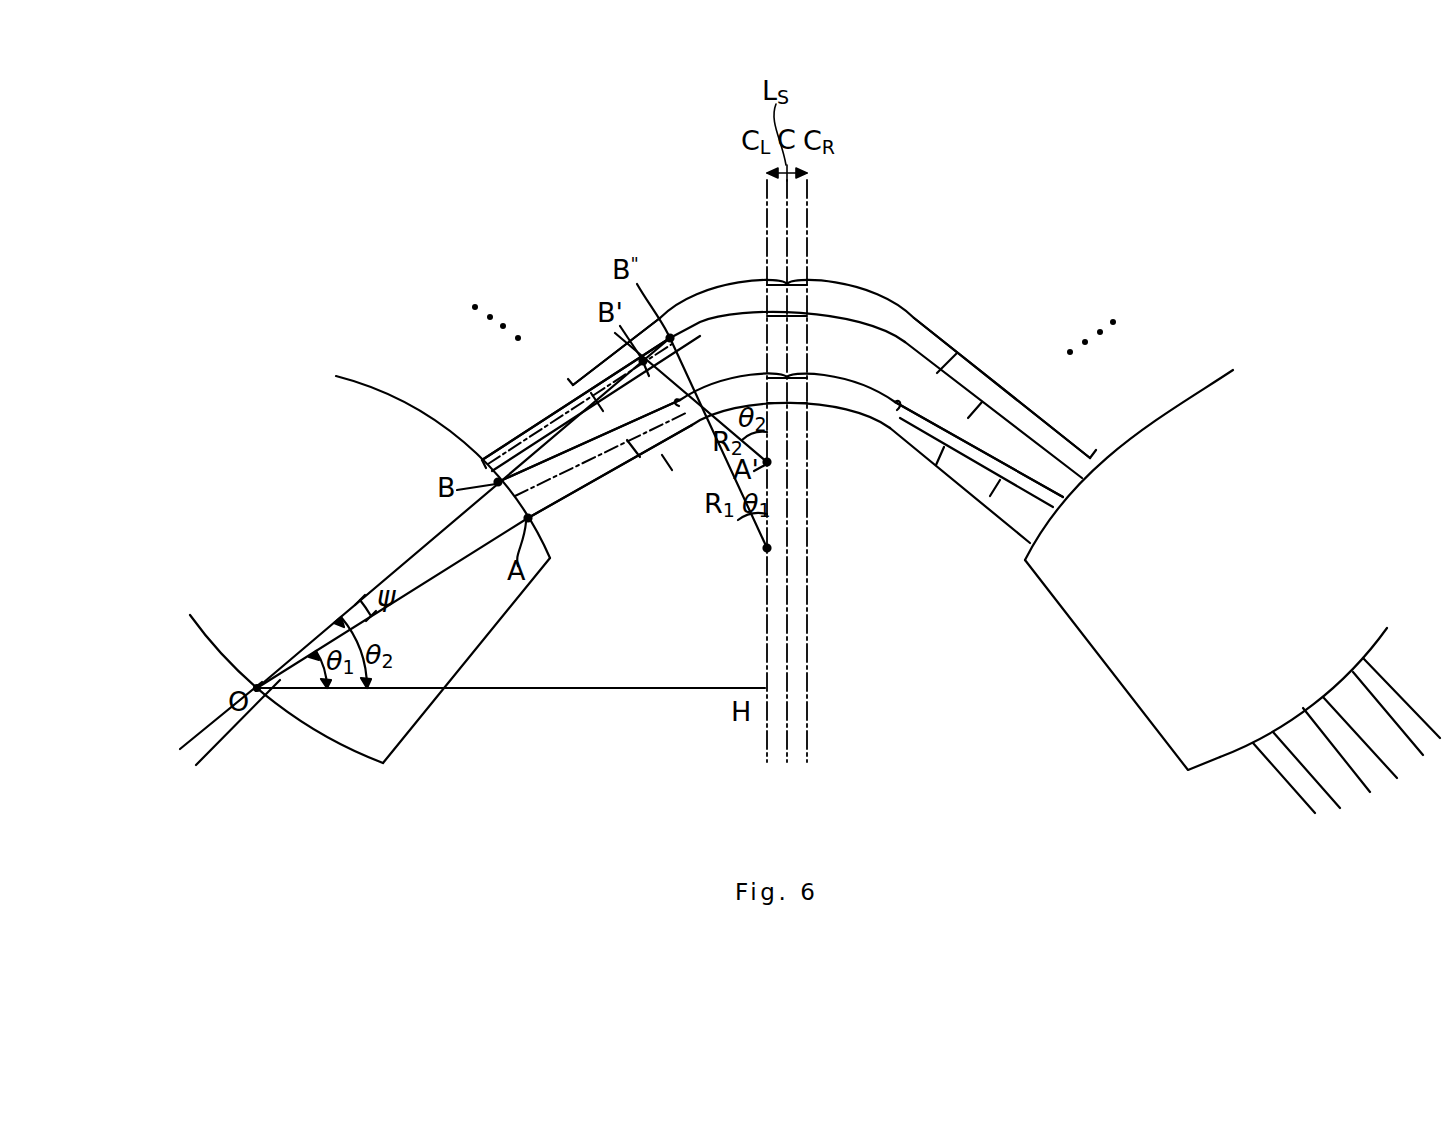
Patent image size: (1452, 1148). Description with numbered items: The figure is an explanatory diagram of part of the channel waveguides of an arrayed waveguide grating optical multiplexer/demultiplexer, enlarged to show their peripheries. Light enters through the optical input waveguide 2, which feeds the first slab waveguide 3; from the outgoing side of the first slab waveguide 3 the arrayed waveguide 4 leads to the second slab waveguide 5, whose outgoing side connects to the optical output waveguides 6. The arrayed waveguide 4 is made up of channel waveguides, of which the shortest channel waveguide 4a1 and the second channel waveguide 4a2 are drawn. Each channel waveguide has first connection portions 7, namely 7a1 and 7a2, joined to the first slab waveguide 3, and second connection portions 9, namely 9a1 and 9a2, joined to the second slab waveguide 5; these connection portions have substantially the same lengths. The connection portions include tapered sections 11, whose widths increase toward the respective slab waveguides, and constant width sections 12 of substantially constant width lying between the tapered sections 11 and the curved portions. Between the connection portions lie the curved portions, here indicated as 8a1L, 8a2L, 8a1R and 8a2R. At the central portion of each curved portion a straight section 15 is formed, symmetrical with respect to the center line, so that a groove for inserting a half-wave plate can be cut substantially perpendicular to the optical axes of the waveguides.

The optical input waveguide 2 is at (214, 738).
The first slab waveguide 3 is at (398, 723).
The arrayed waveguide 4 is at (752, 313).
The shortest channel waveguide 4a1 is at (878, 505).
The second channel waveguide 4a2 is at (926, 330).
The second slab waveguide 5 is at (1108, 672).
The optical output waveguide 6 is at (1288, 772).
The first connection portion 7 is at (591, 425).
The first connection portion of the shortest channel waveguide 7a1 is at (595, 459).
The first connection portion of the second channel waveguide 7a2 is at (591, 394).
The left curved portion of the shortest channel waveguide 8a1L is at (767, 364).
The left curved portion of the second channel waveguide 8a2L is at (755, 273).
The right curved portion of the shortest channel waveguide 8a1R is at (893, 400).
The right curved portion of the second channel waveguide 8a2R is at (905, 305).
The second connection portion 9 is at (990, 430).
The second connection portion of the shortest channel waveguide 9a1 is at (985, 522).
The second connection portion of the second channel waveguide 9a2 is at (997, 398).
The tapered section 11 is at (540, 436).
The constant width section 12 is at (604, 362).
The straight section 15 is at (800, 296).